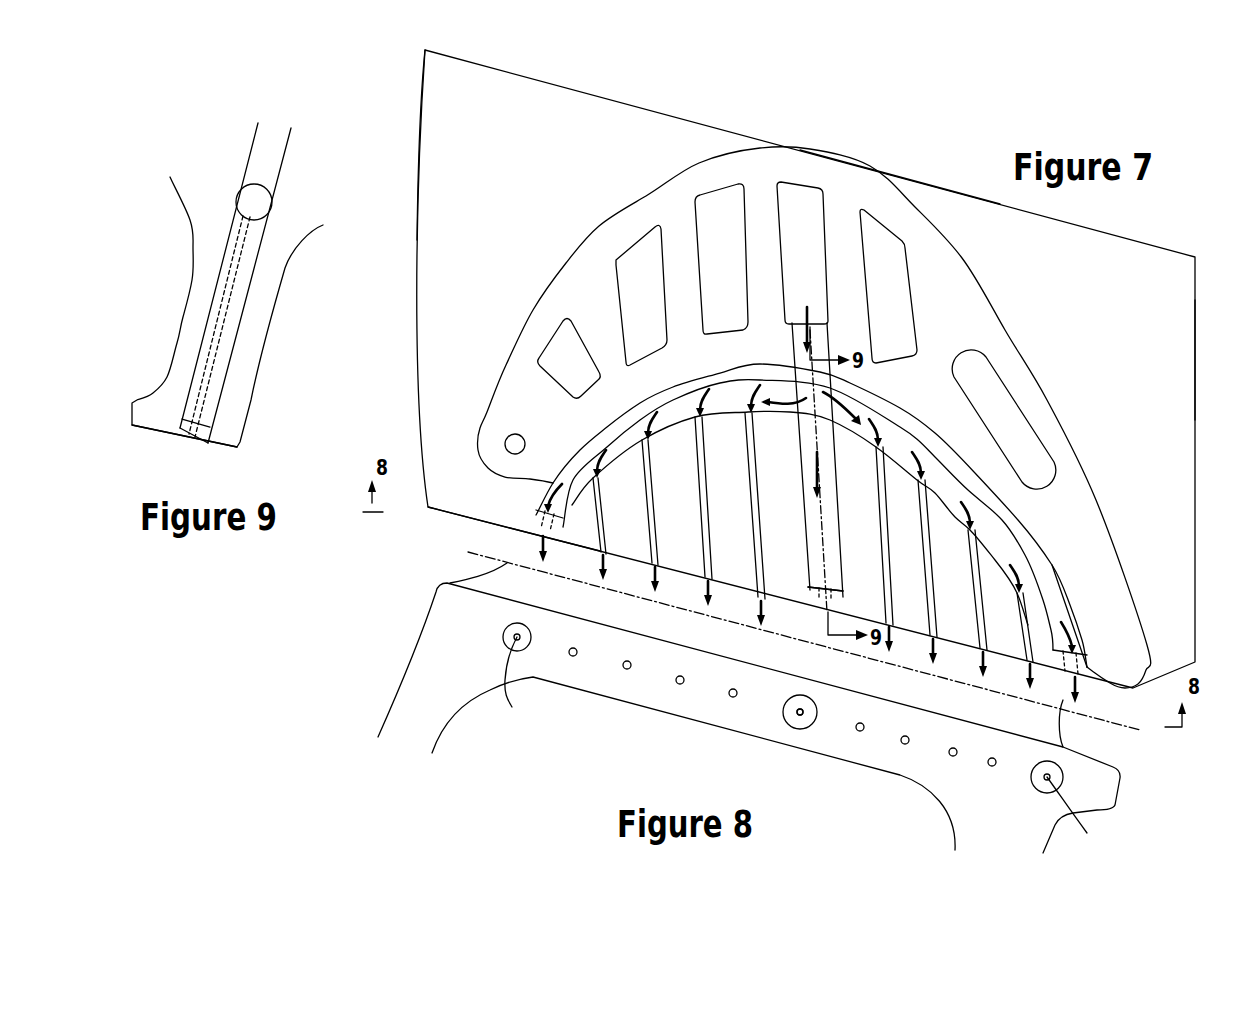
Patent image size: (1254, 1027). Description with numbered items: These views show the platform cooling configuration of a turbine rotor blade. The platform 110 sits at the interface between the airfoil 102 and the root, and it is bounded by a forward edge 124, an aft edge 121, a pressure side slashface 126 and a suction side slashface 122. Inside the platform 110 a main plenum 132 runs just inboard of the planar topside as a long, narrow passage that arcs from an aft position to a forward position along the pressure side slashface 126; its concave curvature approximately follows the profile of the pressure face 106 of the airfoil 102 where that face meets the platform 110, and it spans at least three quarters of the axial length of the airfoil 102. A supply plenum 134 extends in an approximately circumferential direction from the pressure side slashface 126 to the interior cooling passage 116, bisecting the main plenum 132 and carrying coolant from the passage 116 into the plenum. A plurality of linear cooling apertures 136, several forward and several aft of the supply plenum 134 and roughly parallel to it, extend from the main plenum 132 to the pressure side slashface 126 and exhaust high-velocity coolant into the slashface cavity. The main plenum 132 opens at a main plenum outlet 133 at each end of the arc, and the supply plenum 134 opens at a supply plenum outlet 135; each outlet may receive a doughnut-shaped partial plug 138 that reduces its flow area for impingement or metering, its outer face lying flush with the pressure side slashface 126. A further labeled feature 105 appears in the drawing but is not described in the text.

In FIG. 7, the airfoil 102 is at (962, 316).
In FIG. 8, the airfoil 102 is at (812, 664).
In FIG. 7, the air distribution plenum 105 is at (590, 240).
In FIG. 7, the pressure face 106 is at (1064, 580).
In FIG. 9, the platform 110 is at (209, 273).
In FIG. 7, the interior cooling passage 116 is at (658, 306).
In FIG. 7, the aft edge 121 is at (1197, 372).
In FIG. 7, the suction side slashface 122 is at (935, 187).
In FIG. 7, the forward edge 124 is at (423, 72).
In FIG. 7, the pressure side slashface 126 is at (453, 512).
In FIG. 9, the pressure side slashface 126 is at (154, 427).
In FIG. 7, the main plenum 132 is at (587, 473).
In FIG. 9, the main plenum 132 is at (250, 206).
In FIG. 8, the main plenum outlet 133 is at (815, 742).
In FIG. 7, the supply plenum 134 is at (800, 342).
In FIG. 9, the supply plenum 134 is at (267, 157).
In FIG. 7, the supply plenum outlet 135 is at (807, 593).
In FIG. 8, the supply plenum outlet 135 is at (803, 716).
In FIG. 9, the supply plenum outlet 135 is at (190, 440).
In FIG. 7, the cooling apertures 136 is at (699, 518).
In FIG. 8, the cooling apertures 136 is at (574, 656).
In FIG. 9, the cooling apertures 136 is at (220, 326).
In FIG. 7, the partial plug 138 is at (540, 520).
In FIG. 8, the partial plug 138 is at (507, 637).
In FIG. 9, the partial plug 138 is at (175, 425).